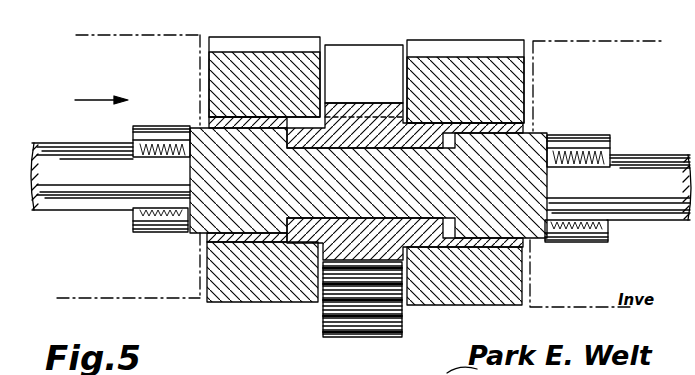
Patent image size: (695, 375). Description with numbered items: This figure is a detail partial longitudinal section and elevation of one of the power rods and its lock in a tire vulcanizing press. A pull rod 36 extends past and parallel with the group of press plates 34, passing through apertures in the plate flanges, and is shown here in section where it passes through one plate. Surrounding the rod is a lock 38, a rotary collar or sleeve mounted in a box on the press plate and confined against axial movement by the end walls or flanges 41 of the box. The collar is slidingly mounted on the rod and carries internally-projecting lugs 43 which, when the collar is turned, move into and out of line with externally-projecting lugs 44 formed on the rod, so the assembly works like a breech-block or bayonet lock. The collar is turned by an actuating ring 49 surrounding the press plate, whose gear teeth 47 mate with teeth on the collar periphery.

The press plates 34 is at (129, 38).
The pull rods 36 is at (635, 170).
The locks 38 is at (300, 240).
The end walls or flanges 41 is at (218, 77).
The internally-projecting lugs 43 is at (335, 133).
The externally-projecting lugs 44 is at (575, 142).
The gear teeth 47 is at (345, 308).
The actuating ring 49 is at (363, 53).